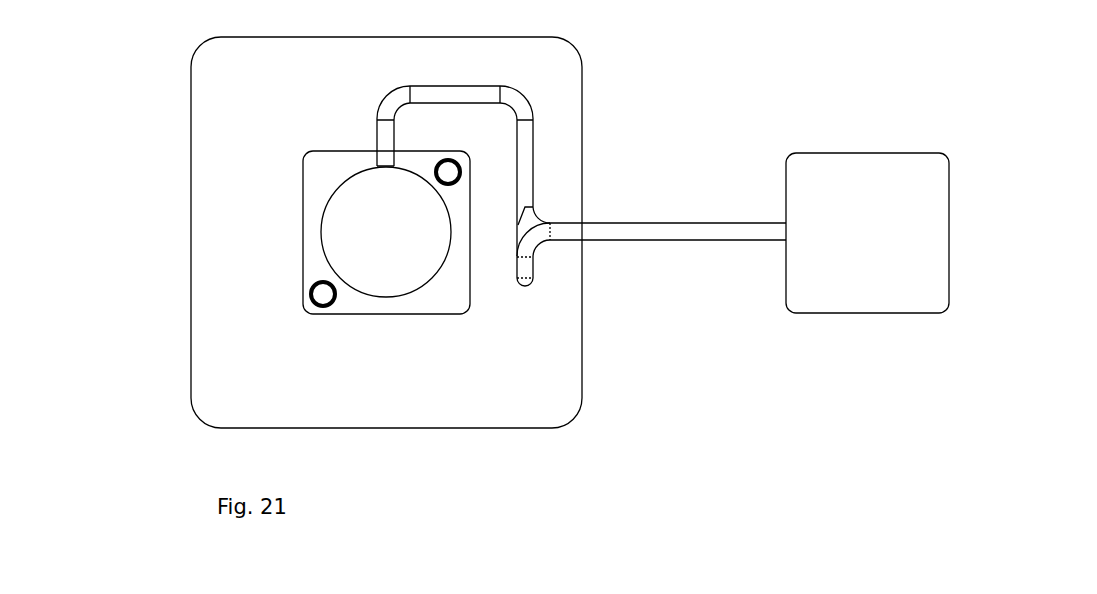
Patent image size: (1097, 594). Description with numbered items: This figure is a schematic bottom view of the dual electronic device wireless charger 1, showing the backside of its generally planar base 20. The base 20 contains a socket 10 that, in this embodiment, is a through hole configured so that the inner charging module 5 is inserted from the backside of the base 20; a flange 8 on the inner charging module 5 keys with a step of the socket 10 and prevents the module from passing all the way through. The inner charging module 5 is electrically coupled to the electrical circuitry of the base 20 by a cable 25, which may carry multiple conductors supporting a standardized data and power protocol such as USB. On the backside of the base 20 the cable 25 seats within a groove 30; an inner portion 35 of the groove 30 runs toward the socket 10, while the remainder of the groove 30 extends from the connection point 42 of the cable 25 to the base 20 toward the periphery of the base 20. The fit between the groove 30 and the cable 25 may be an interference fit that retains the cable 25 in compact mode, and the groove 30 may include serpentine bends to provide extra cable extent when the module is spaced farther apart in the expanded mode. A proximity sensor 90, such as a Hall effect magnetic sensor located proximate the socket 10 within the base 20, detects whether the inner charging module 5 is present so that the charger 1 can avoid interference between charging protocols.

The dual electronic device wireless charger 1 is at (503, 273).
The base 20 is at (336, 232).
The socket 10 is at (408, 338).
The proximity sensor 90 is at (277, 264).
The groove 30 is at (544, 160).
The inner portion of the groove 35 is at (455, 182).
The connection point 42 is at (615, 295).
The cable 25 is at (668, 178).
The inner charging module 5 is at (867, 223).
The flange 8 is at (867, 265).